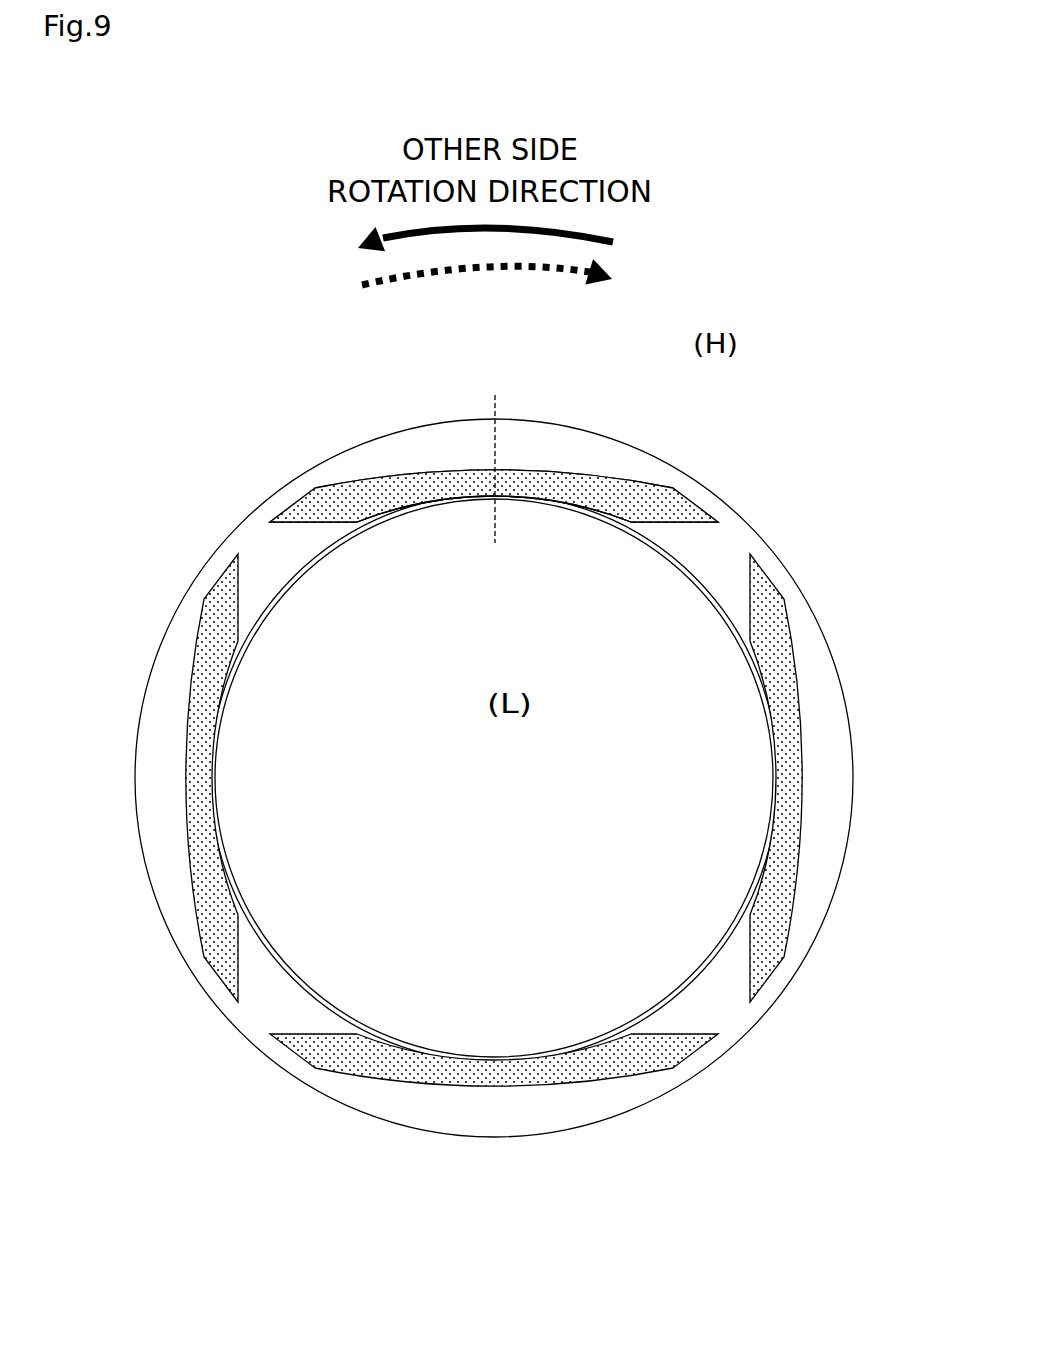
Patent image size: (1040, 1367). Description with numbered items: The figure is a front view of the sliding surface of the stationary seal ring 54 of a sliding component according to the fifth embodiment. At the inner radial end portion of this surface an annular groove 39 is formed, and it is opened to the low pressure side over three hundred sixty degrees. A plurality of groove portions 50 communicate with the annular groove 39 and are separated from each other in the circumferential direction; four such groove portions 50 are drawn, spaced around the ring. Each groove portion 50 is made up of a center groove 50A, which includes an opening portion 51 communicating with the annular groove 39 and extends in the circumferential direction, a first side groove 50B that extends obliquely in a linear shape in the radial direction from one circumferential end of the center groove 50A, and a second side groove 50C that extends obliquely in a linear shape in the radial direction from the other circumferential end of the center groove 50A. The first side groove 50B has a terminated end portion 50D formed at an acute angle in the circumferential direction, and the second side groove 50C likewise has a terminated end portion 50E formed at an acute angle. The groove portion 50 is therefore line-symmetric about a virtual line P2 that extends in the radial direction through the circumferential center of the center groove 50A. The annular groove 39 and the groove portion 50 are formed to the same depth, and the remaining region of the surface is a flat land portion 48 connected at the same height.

The annular groove 39 is at (308, 570).
The land portion 48 is at (715, 547).
The groove portion 50 is at (496, 759).
The center groove 50A is at (470, 462).
The first side groove 50B is at (350, 487).
The second side groove 50C is at (640, 487).
The terminated end portion 50D is at (287, 507).
The terminated end portion 50E is at (708, 508).
The opening portion 51 is at (555, 503).
The stationary seal ring 54 is at (693, 447).
The virtual line P2 is at (496, 485).